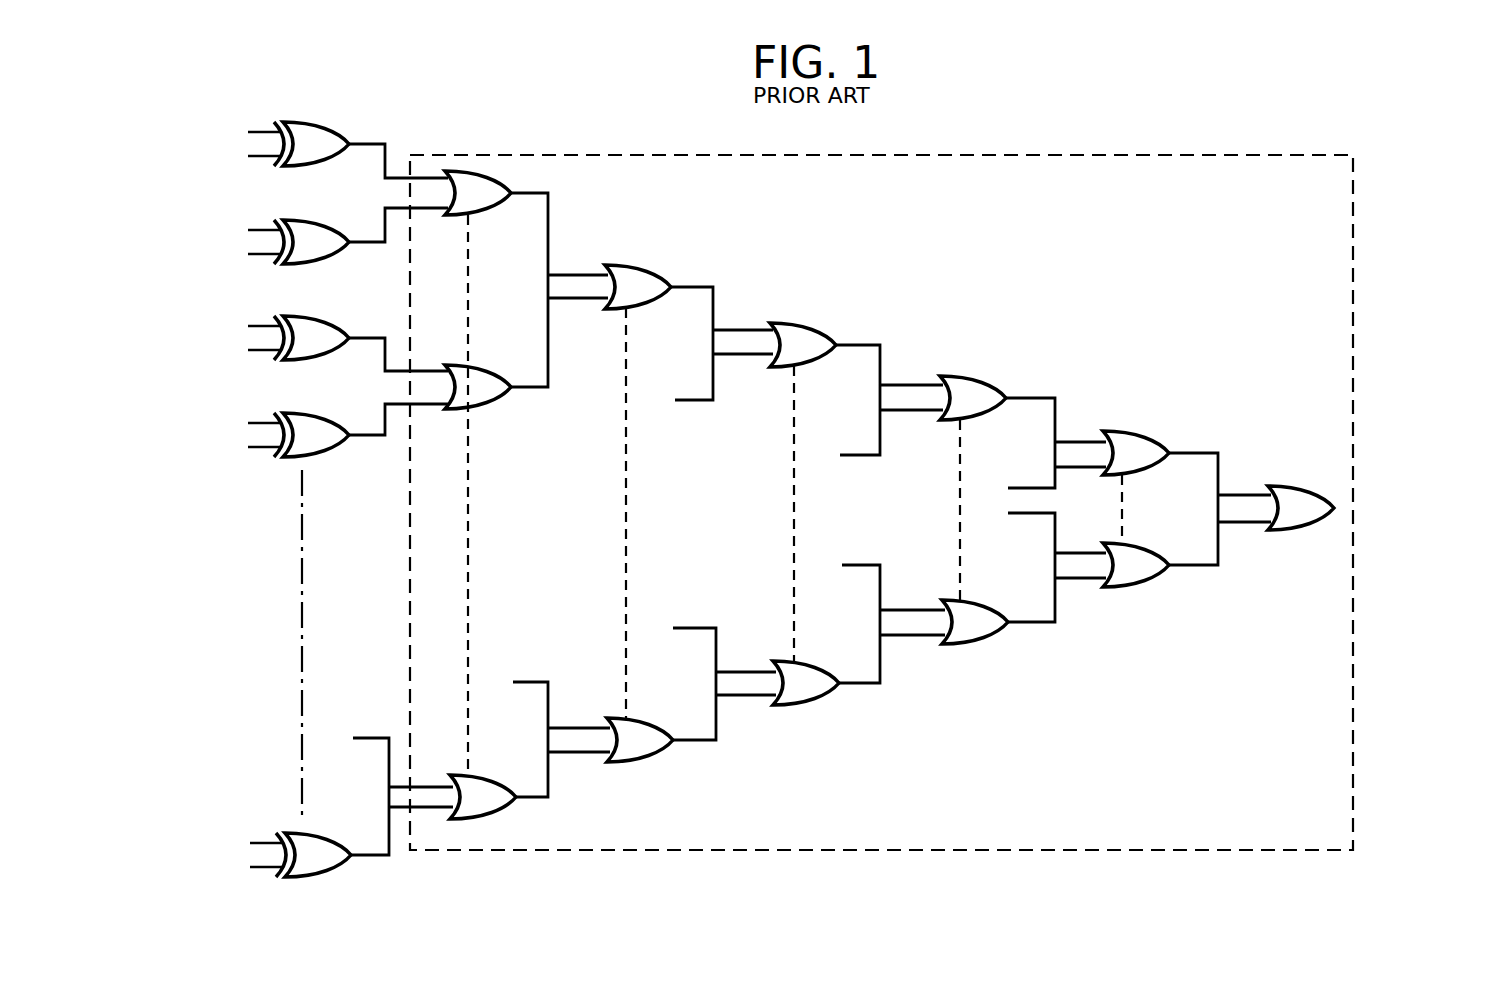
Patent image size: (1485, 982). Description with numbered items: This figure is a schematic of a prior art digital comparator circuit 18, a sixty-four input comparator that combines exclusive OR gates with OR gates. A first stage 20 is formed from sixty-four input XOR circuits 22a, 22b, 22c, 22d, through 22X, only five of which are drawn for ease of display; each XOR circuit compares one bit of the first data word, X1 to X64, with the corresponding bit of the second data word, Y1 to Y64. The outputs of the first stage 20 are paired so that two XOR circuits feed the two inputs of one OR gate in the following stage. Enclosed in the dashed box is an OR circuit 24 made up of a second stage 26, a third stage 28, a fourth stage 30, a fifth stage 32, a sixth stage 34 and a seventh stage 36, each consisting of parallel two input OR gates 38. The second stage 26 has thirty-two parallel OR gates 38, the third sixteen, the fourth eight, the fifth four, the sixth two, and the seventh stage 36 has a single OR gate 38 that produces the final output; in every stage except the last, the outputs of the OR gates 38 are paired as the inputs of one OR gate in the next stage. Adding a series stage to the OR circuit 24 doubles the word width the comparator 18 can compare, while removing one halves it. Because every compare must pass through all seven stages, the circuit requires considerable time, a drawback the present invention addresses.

The prior art digital comparator circuit 18 is at (1372, 748).
The first stage 20 is at (305, 612).
The input XOR circuit 22a is at (313, 123).
The input XOR circuit 22b is at (312, 222).
The input XOR circuit 22c is at (337, 325).
The input XOR circuit 22d is at (313, 457).
The input XOR circuit 22X is at (333, 835).
The OR circuit 24 is at (1353, 553).
The second stage 26 is at (468, 532).
The third stage 28 is at (626, 598).
The fourth stage 30 is at (794, 487).
The fifth stage 32 is at (958, 548).
The sixth stage 34 is at (1122, 532).
The seventh stage 36 is at (1275, 530).
The two input OR gate 38 is at (618, 264).